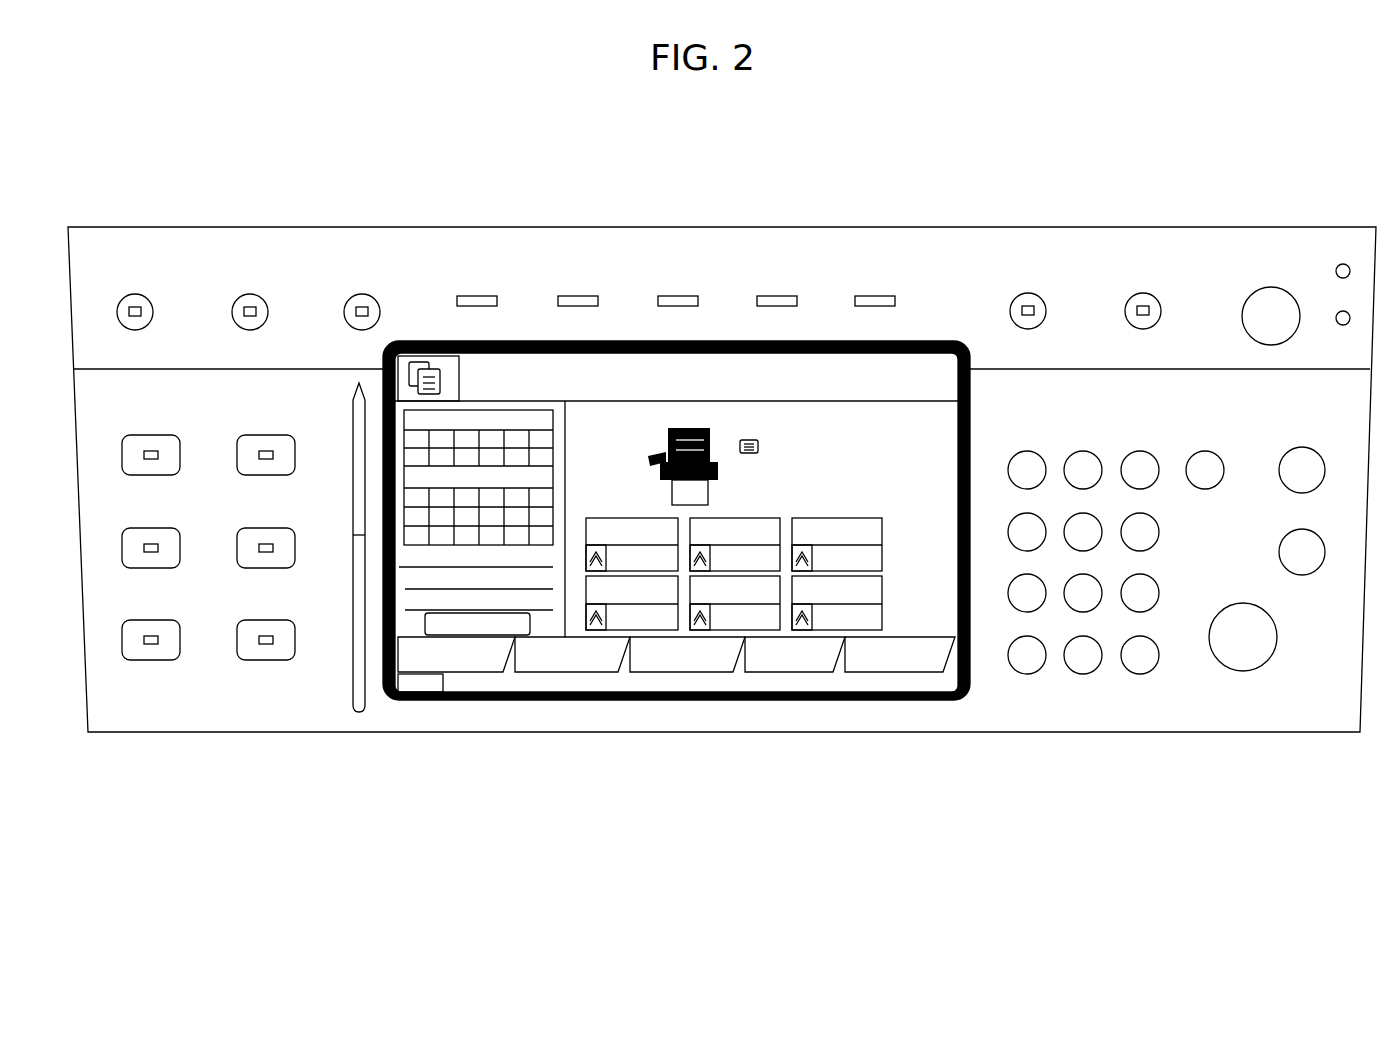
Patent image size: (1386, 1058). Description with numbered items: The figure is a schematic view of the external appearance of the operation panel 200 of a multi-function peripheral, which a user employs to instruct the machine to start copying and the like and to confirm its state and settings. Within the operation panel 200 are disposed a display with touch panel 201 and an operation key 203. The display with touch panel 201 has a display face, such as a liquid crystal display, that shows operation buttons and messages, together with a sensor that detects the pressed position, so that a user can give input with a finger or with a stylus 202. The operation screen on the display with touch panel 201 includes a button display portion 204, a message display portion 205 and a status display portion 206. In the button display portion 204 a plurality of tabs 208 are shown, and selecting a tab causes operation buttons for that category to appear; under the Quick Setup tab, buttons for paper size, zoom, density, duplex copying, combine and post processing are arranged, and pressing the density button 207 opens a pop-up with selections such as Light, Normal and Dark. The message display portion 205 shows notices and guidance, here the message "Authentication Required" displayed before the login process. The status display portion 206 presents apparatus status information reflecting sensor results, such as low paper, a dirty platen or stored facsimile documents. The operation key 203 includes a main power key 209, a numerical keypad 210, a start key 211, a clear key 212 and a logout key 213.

The operation panel 200 is at (722, 488).
The display with touch panel 201 is at (676, 492).
The stylus 202 is at (357, 712).
The operation key 203 is at (720, 654).
The button display portion 204 is at (637, 640).
The message display portion 205 is at (815, 365).
The status display portion 206 is at (458, 700).
The density button 207 is at (872, 576).
The tabs 208 is at (706, 640).
The main power key 209 is at (1293, 318).
The numerical keypad 210 is at (1088, 696).
The start key 211 is at (1267, 712).
The clear key 212 is at (1205, 492).
The logout key 213 is at (1160, 315).